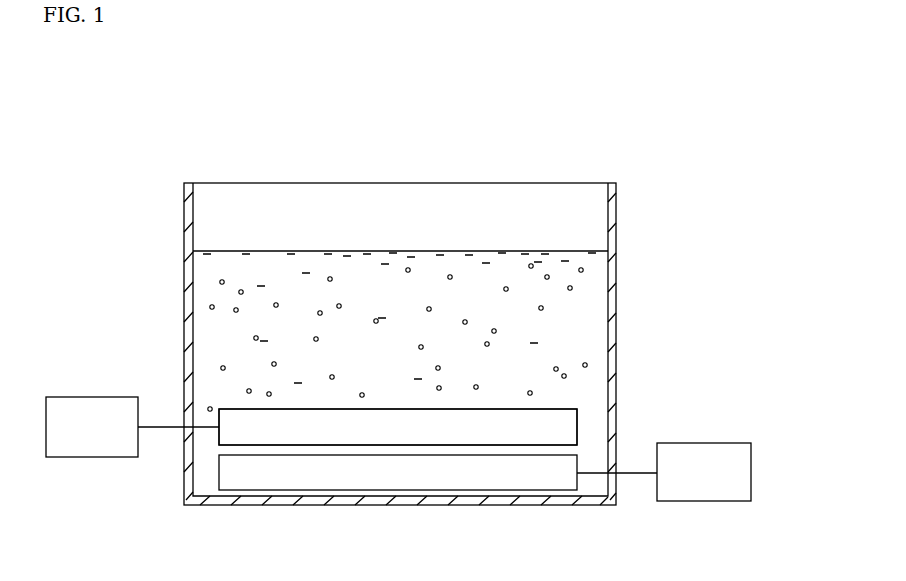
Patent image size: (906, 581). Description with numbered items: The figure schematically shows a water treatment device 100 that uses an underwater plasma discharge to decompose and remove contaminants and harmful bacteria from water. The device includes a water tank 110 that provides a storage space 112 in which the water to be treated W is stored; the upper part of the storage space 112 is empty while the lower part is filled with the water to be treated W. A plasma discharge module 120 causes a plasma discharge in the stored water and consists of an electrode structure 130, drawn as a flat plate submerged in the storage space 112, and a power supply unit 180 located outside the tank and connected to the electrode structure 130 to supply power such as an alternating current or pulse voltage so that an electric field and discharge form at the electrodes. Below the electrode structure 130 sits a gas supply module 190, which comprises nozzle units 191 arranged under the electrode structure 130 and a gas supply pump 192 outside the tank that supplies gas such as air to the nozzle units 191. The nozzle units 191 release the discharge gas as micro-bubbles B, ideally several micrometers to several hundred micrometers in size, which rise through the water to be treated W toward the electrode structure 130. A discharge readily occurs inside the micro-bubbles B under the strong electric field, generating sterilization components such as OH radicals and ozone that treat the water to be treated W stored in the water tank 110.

The water treatment device 100 is at (624, 114).
The water tank 110 is at (615, 197).
The storage space 112 is at (268, 222).
The plasma discharge module 120 is at (220, 388).
The electrode structure 130 is at (578, 416).
The power supply unit 180 is at (93, 397).
The gas supply module 190 is at (585, 494).
The nozzle units 191 is at (250, 480).
The gas supply pump 192 is at (708, 447).
The water to be treated W is at (595, 292).
The micro-bubbles B is at (572, 317).